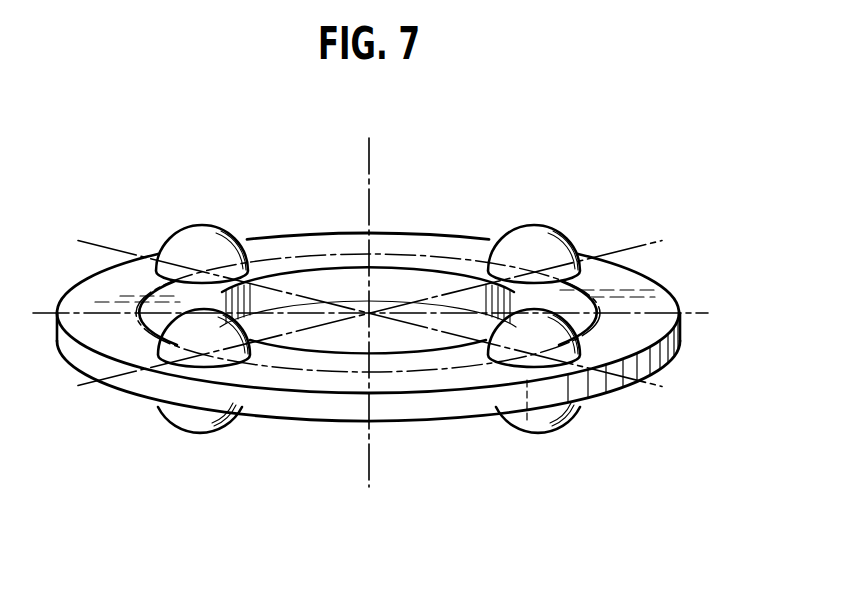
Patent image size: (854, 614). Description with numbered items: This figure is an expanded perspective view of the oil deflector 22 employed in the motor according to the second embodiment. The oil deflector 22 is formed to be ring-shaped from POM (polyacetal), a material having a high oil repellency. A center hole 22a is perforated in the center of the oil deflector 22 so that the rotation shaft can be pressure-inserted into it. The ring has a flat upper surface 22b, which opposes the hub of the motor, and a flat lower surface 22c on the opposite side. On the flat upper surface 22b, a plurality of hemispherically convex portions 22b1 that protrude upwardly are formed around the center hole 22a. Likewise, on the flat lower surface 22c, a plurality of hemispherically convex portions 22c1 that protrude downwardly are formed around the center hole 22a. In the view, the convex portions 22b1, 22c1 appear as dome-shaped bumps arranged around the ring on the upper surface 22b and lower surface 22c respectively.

The oil deflector 22 is at (307, 224).
The center hole 22a is at (408, 280).
The flat upper surface 22b is at (602, 285).
The hemispherically convex portions 22b1 is at (547, 224).
The flat lower surface 22c is at (596, 398).
The hemispherically convex portions 22c1 is at (527, 423).